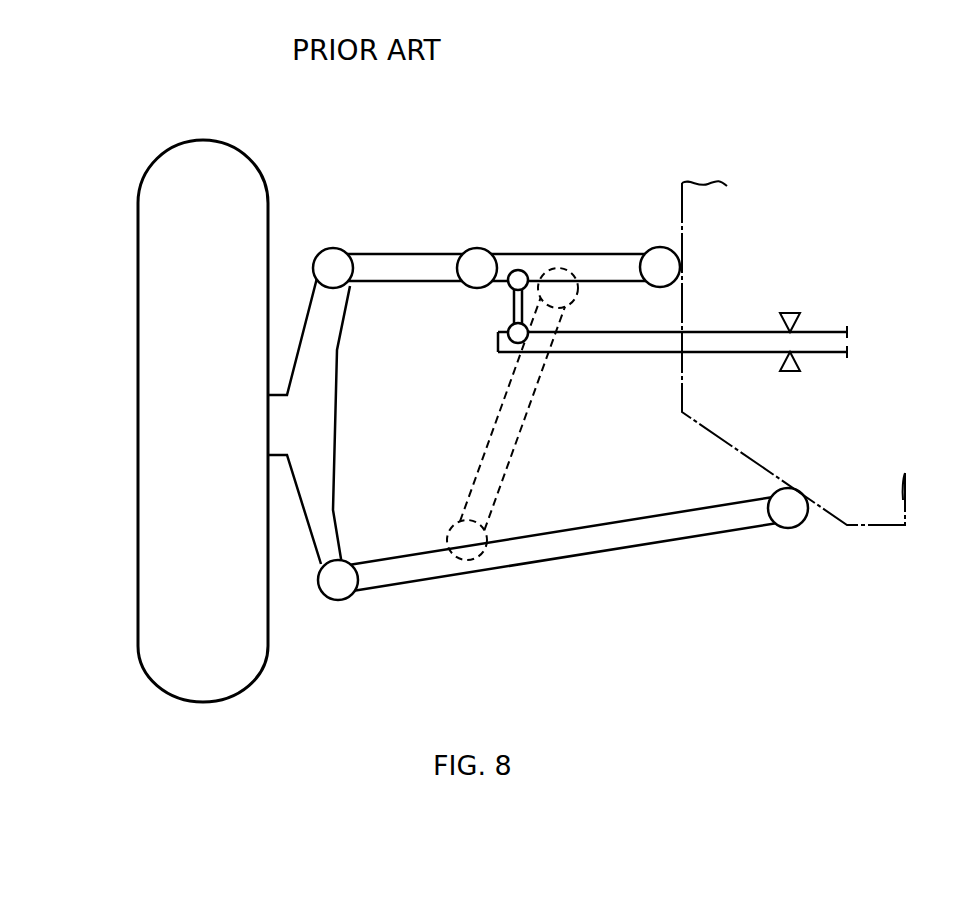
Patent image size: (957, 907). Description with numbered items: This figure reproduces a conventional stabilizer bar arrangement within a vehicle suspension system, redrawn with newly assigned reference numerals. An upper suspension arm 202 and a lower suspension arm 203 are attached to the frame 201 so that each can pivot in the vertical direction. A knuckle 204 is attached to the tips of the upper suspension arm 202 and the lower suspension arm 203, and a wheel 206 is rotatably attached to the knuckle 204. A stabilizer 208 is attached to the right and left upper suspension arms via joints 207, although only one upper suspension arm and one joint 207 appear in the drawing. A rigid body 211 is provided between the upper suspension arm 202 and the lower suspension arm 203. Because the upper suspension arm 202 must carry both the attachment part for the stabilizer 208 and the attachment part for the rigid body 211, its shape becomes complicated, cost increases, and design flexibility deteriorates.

The frame 201 is at (684, 215).
The upper suspension arm 202 is at (551, 253).
The lower suspension arm 203 is at (543, 562).
The knuckle 204 is at (334, 425).
The wheel 206 is at (139, 451).
The joint 207 is at (509, 305).
The stabilizer 208 is at (613, 352).
The rigid body 211 is at (517, 440).